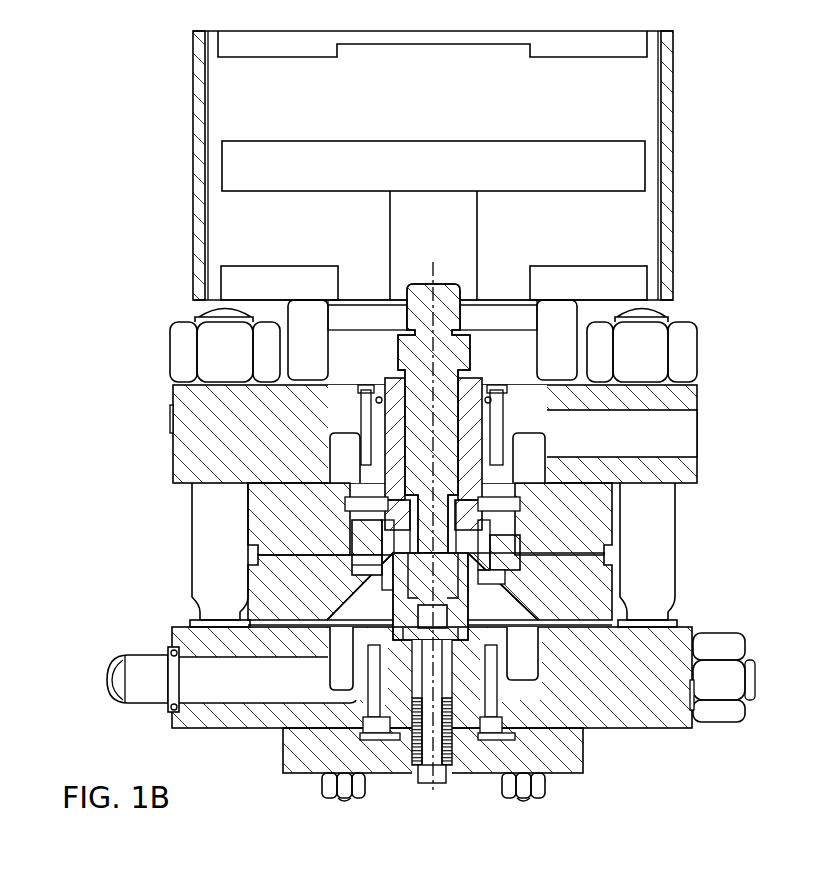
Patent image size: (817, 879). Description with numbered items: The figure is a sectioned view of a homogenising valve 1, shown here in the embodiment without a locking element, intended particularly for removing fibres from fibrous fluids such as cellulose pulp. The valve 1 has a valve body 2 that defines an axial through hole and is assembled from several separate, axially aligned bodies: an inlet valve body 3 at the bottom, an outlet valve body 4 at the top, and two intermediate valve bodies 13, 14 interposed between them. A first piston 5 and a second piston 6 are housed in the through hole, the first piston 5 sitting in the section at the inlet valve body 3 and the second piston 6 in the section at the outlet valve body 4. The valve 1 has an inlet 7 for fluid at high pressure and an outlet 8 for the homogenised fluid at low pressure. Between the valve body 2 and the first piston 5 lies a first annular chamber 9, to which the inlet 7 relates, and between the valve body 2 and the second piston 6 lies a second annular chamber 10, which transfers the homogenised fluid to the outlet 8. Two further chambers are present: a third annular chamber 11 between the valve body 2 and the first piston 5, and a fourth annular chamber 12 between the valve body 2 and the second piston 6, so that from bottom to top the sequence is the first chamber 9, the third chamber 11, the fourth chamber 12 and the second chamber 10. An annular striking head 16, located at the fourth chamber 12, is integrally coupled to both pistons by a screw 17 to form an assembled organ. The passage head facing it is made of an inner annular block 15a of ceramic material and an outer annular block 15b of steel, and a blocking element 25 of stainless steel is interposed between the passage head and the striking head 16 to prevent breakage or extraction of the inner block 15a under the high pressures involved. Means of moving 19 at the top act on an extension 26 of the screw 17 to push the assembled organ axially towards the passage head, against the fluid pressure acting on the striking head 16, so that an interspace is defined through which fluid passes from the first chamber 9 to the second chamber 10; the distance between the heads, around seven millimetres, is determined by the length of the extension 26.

The homogenising valve 1 is at (449, 416).
The valve body 2 is at (399, 233).
The inlet valve body 3 is at (431, 714).
The outlet valve body 4 is at (472, 425).
The first piston 5 is at (462, 590).
The second piston 6 is at (475, 433).
The inlet 7 is at (243, 695).
The outlet 8 is at (693, 436).
The first annular chamber 9 is at (348, 660).
The second annular chamber 10 is at (340, 468).
The third annular chamber 11 is at (347, 614).
The fourth annular chamber 12 is at (372, 500).
The intermediate valve body 13 is at (240, 570).
The intermediate valve body 14 is at (240, 532).
The inner annular block 15a is at (375, 568).
The outer annular block 15b is at (358, 550).
The striking head 16 is at (412, 502).
The screw 17 is at (420, 584).
The means of moving 19 is at (441, 133).
The blocking element 25 is at (505, 524).
The extension 26 is at (433, 297).